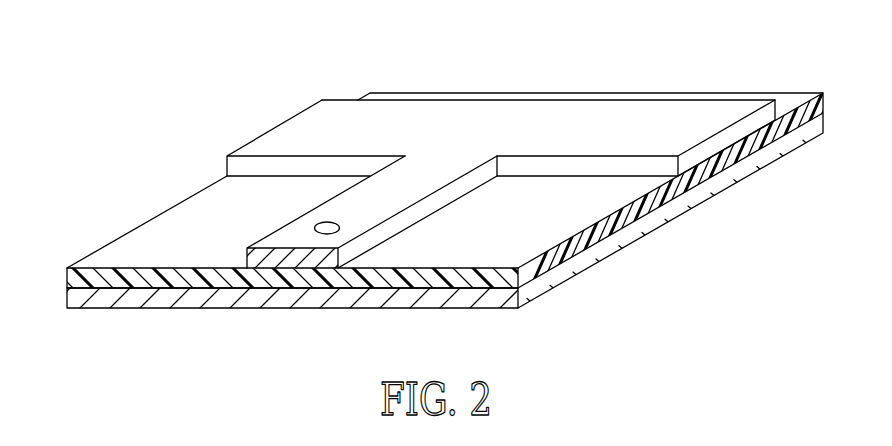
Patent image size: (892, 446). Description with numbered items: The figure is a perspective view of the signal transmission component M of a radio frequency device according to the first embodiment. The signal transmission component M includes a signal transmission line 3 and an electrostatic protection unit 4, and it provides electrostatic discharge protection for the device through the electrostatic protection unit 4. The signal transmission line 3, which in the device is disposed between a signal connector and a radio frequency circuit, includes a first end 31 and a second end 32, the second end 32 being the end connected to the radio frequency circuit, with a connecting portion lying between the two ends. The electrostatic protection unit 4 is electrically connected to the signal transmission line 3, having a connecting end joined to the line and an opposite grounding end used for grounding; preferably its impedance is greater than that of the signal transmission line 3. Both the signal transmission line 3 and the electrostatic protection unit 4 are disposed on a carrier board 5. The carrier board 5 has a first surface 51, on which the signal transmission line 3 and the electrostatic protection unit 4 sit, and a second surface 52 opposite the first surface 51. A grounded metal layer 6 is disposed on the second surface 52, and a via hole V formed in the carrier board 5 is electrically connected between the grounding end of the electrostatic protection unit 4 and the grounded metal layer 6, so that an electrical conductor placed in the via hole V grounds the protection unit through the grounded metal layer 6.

The signal transmission component M is at (91, 38).
The signal transmission line 3 is at (502, 113).
The first end 31 is at (690, 120).
The second end 32 is at (305, 132).
The electrostatic protection unit 4 is at (438, 208).
The via hole V is at (325, 226).
The carrier board 5 is at (163, 215).
The first surface 51 is at (105, 262).
The second surface 52 is at (86, 289).
The grounded metal layer 6 is at (643, 235).